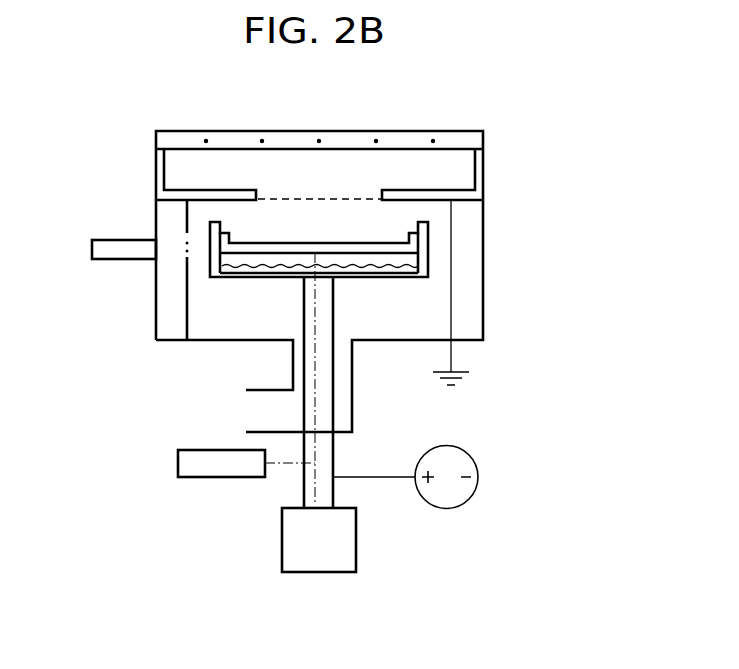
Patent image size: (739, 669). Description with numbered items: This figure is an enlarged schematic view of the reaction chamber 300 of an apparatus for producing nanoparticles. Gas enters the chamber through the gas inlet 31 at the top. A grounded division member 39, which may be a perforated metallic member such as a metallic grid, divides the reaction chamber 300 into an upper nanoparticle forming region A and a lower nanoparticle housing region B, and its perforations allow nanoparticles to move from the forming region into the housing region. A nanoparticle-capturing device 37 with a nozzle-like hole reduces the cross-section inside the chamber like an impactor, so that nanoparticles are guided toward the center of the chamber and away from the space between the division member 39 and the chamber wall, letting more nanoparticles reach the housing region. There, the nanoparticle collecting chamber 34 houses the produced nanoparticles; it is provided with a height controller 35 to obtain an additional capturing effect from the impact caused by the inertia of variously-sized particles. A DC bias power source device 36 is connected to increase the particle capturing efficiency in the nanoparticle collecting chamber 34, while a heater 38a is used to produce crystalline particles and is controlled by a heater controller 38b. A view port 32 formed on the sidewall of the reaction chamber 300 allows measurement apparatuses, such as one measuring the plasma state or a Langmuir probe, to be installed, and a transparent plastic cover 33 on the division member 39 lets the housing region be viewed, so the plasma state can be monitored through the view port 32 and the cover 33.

The reaction chamber 300 is at (113, 101).
The gas inlet 31 is at (157, 141).
The view port 32 is at (90, 250).
The transparent plastic cover 33 is at (186, 238).
The nanoparticle collecting chamber 34 is at (318, 242).
The height controller 35 is at (318, 575).
The DC bias power source device 36 is at (480, 477).
The nanoparticle-capturing device 37 is at (481, 192).
The heater 38a is at (377, 269).
The heater controller 38b is at (222, 481).
The division member 39 is at (205, 197).